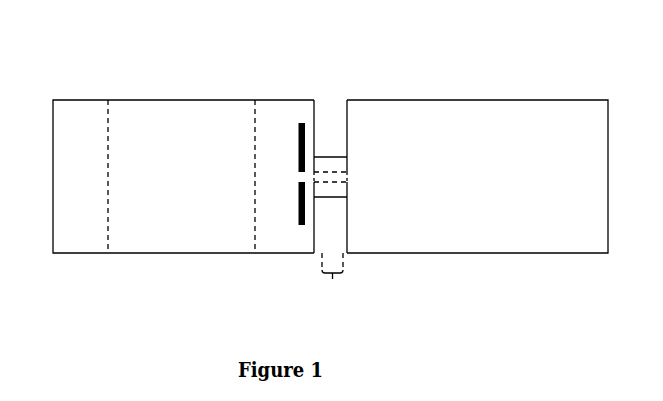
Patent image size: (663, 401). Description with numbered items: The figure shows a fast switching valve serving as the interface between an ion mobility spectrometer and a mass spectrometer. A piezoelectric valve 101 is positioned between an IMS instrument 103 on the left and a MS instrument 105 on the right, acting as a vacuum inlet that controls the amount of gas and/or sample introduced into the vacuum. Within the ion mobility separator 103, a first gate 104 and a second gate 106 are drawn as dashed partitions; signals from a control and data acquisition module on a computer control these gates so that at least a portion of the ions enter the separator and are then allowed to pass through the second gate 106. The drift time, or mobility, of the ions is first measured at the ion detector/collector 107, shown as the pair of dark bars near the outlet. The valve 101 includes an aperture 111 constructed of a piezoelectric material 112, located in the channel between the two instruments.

The piezoelectric valve 101 is at (332, 279).
The IMS instrument 103 is at (183, 186).
The first gate 104 is at (108, 230).
The MS instrument 105 is at (477, 176).
The second gate 106 is at (255, 230).
The ion detector/collector 107 is at (300, 125).
The aperture 111 is at (331, 172).
The piezoelectric material 112 is at (325, 163).